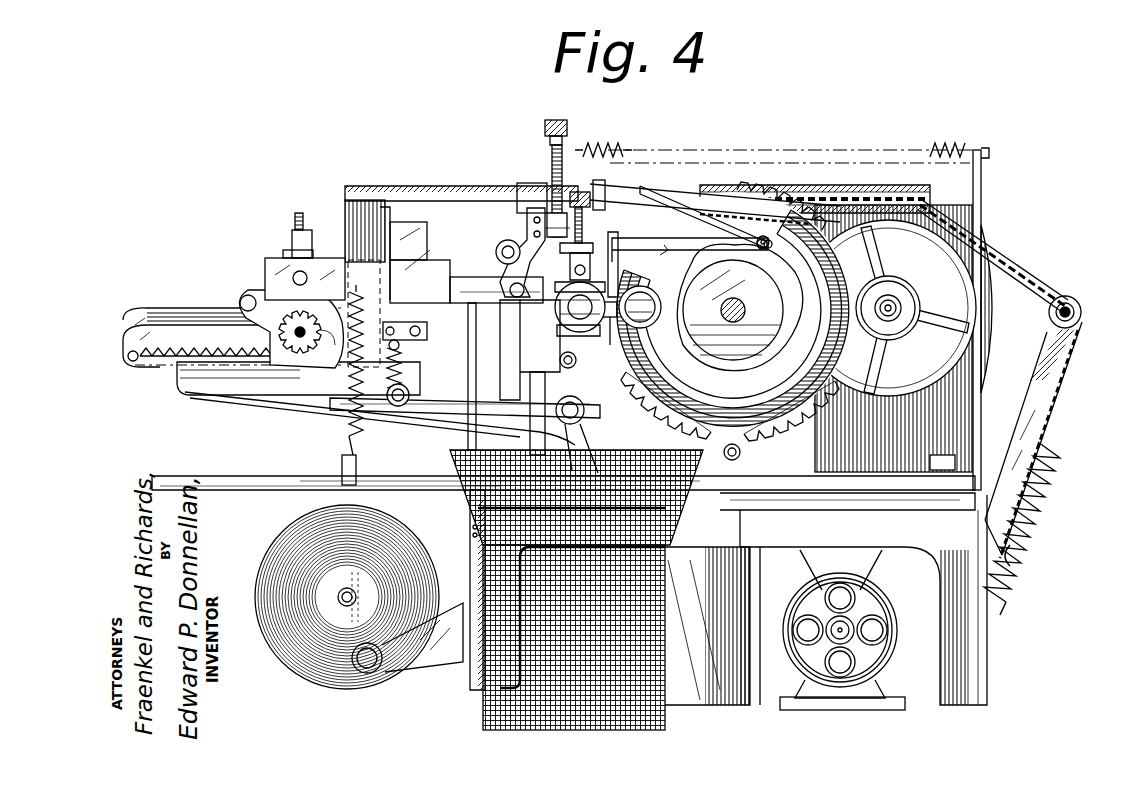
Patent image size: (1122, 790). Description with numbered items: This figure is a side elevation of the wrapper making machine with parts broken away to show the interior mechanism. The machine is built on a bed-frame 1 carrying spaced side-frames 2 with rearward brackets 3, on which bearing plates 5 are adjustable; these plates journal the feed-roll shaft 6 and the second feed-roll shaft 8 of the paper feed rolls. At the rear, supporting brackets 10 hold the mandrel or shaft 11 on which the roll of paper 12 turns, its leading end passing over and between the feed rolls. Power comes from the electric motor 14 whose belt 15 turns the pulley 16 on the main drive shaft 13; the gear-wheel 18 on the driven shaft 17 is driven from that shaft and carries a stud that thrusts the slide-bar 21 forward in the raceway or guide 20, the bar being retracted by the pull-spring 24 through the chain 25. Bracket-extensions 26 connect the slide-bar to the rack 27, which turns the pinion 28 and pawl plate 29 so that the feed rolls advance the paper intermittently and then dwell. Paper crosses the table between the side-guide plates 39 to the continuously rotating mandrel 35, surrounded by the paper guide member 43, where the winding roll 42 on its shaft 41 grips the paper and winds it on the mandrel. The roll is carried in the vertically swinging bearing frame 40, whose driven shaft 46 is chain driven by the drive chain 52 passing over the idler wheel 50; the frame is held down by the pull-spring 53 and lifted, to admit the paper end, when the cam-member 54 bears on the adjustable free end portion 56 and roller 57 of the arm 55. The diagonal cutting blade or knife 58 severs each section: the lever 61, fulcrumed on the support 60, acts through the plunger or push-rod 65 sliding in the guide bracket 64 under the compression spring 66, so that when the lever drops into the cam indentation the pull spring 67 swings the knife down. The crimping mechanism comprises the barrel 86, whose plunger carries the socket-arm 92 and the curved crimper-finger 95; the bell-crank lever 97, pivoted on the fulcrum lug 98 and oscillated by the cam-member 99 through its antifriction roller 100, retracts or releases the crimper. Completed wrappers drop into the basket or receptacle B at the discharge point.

The bed-frame 1 is at (470, 560).
The side-frames 2 is at (905, 436).
The rearward extensions or brackets 3 is at (185, 392).
The bearing plates 5 is at (270, 262).
The feed-roll shaft 6 is at (265, 400).
The second feed-roll shaft 8 is at (306, 275).
The supporting brackets 10 is at (415, 665).
The mandrel or shaft 11 is at (355, 590).
The roll of paper 12 is at (275, 545).
The main drive shaft 13 is at (893, 306).
The electric motor 14 is at (880, 615).
The belt 15 is at (962, 438).
The pulley 16 is at (995, 315).
The driven shaft 17 is at (730, 305).
The gear-wheel 18 is at (880, 258).
The longitudinal raceway or guide 20 is at (885, 200).
The slide-bar 21 is at (445, 200).
The pull-spring 24 is at (1042, 502).
The chain 25 is at (1010, 262).
The bracket-extensions 26 is at (360, 220).
The rack 27 is at (182, 350).
The gear or pinion 28 is at (280, 335).
The pawl plate 29 is at (268, 292).
The rotary mandrel 35 is at (535, 368).
The side-guide plates 39 is at (470, 278).
The vertically swinging bearing frame 40 is at (520, 195).
The shaft 41 is at (555, 292).
The winding roll 42 is at (560, 318).
The paper guide member 43 is at (555, 335).
The driven shaft 46 is at (550, 190).
The idler wheel 50 is at (500, 253).
The drive chain 52 is at (528, 224).
The pull-spring 53 is at (606, 146).
The cam-member 54 is at (707, 352).
The arm 55 is at (710, 195).
The adjustable free end portion 56 is at (755, 205).
The roller 57 is at (760, 235).
The cutting blade or knife 58 is at (425, 262).
The support 60 is at (575, 398).
The lever 61 is at (440, 418).
The guide bracket 64 is at (400, 345).
The plunger or push-rod 65 is at (400, 324).
The compression spring 66 is at (425, 378).
The pull spring 67 is at (348, 425).
The barrel 86 is at (640, 330).
The socket-arm 92 is at (610, 345).
The crimper-finger 95 is at (578, 360).
The bell-crank lever 97 is at (700, 268).
The fulcrum lug 98 is at (612, 245).
The cam-member 99 is at (778, 262).
The antifriction roller 100 is at (766, 249).
The basket or receptacle B is at (655, 680).